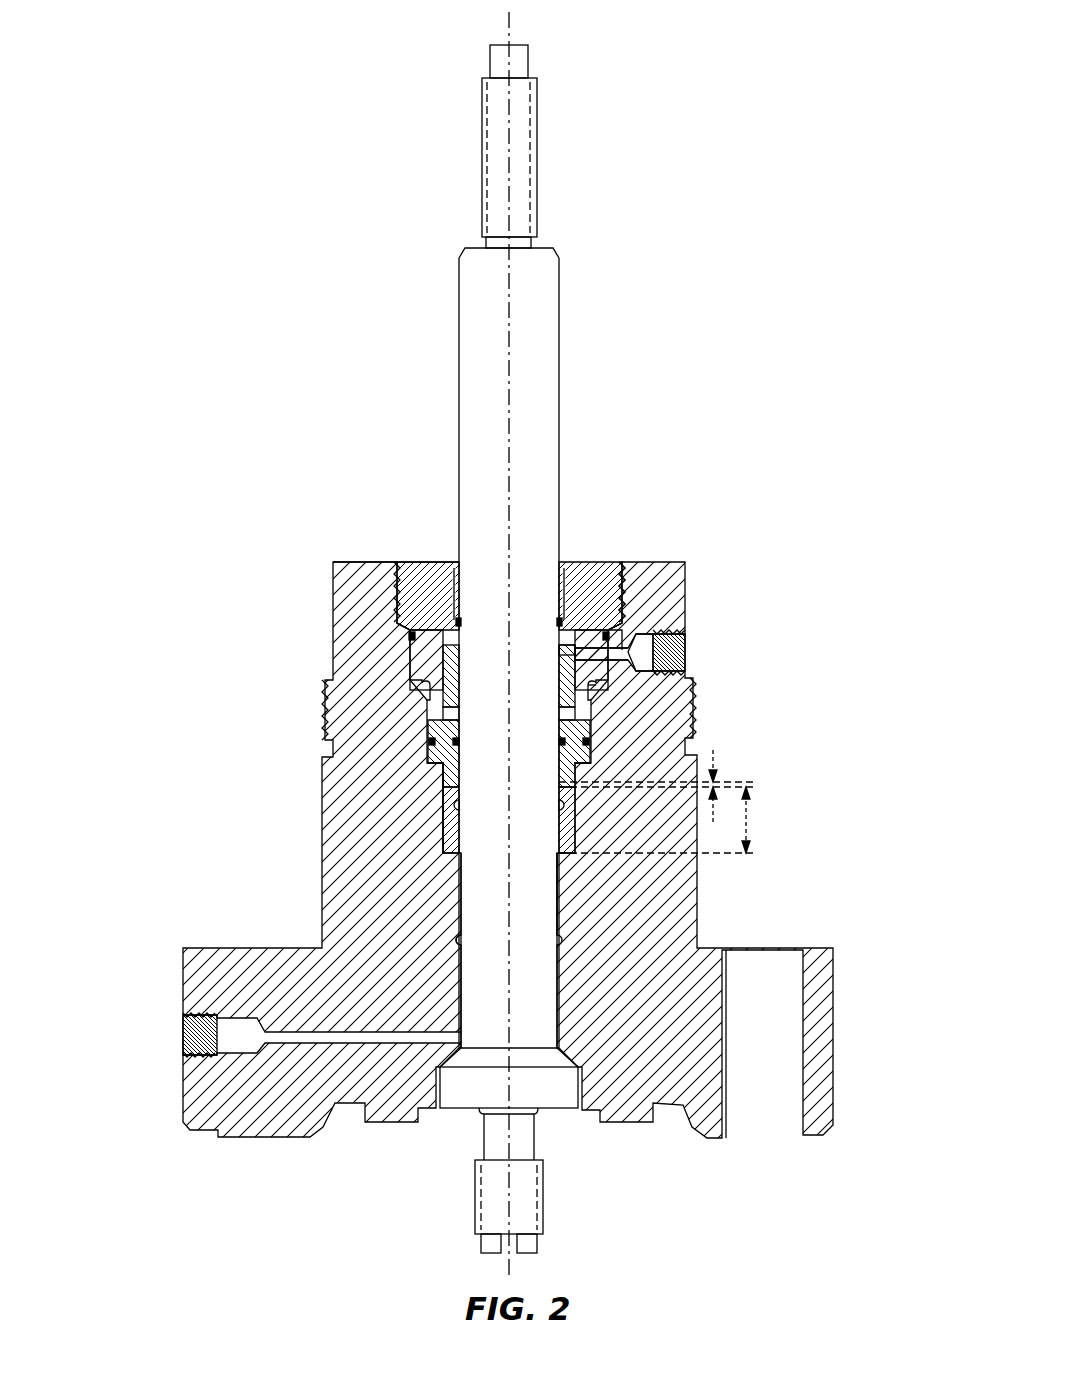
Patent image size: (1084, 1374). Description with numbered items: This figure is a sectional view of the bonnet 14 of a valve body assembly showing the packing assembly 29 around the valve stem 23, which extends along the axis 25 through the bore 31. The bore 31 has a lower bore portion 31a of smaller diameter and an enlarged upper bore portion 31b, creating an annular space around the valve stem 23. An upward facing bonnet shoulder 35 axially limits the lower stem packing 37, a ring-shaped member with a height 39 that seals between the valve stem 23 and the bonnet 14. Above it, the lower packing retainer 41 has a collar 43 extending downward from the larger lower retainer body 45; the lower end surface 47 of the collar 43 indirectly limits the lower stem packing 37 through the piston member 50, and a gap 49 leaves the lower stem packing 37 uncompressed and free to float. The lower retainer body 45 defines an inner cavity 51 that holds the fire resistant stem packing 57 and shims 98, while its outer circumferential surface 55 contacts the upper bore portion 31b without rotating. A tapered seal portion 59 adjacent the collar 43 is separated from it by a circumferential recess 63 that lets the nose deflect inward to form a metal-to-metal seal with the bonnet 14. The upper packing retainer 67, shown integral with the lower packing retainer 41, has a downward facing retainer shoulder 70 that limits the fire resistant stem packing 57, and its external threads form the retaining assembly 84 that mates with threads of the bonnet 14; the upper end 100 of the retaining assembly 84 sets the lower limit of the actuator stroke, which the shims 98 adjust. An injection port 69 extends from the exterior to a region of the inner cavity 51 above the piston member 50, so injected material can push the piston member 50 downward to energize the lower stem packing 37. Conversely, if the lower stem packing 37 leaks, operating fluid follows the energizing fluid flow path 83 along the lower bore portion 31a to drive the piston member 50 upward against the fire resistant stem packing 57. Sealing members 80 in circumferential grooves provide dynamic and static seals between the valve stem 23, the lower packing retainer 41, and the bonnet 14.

The bonnet 14 is at (348, 595).
The valve stem 23 is at (546, 370).
The longitudinal axis 25 is at (511, 34).
The packing assembly 29 is at (632, 548).
The bore 31 is at (558, 940).
The lower bore portion 31a is at (460, 940).
The upper bore portion 31b is at (443, 806).
The upward facing bonnet shoulder 35 is at (445, 850).
The lower stem packing 37 is at (445, 832).
The height 39 is at (748, 822).
The lower packing retainer 41 is at (652, 672).
The collar 43 is at (585, 740).
The lower retainer body 45 is at (424, 657).
The lower end surface 47 is at (425, 730).
The gap 49 is at (715, 765).
The piston member 50 is at (430, 770).
The inner cavity 51 is at (460, 690).
The outer circumferential surface 55 is at (404, 650).
The fire resistant stem packing 57 is at (640, 656).
The tapered seal portion 59 is at (598, 690).
The circumferential recess 63 is at (420, 683).
The upper packing retainer 67 is at (628, 597).
The injection port 69 is at (620, 650).
The downward facing retainer shoulder 70 is at (563, 645).
The sealing members 80 is at (462, 622).
The energizing fluid flow path 83 is at (578, 905).
The retaining assembly 84 is at (374, 577).
The shims 98 is at (558, 724).
The upper end 100 is at (425, 562).